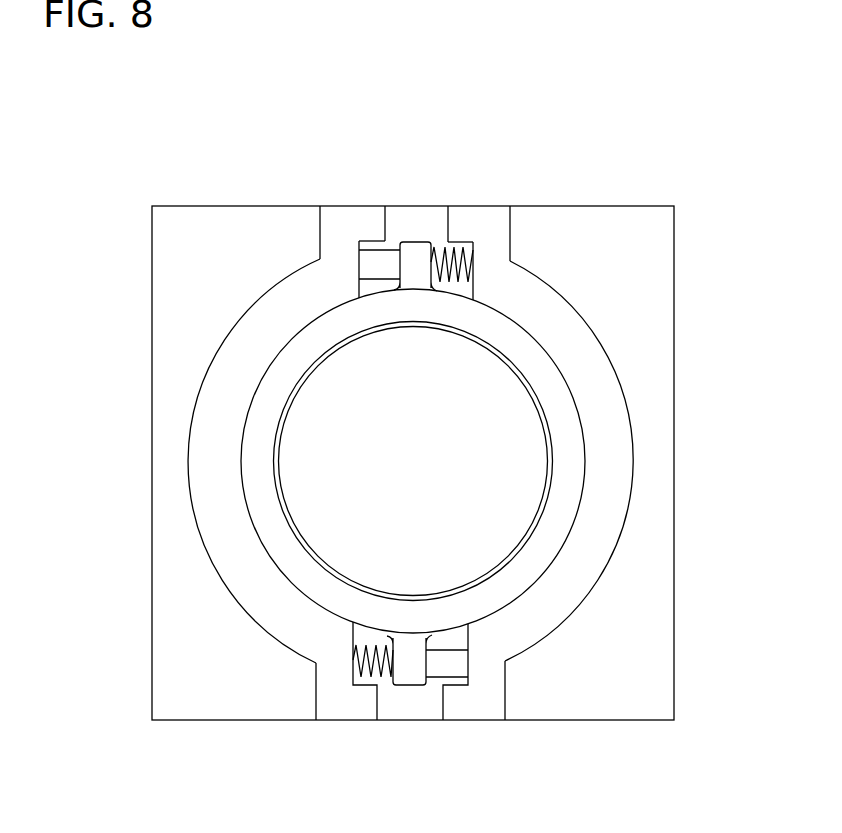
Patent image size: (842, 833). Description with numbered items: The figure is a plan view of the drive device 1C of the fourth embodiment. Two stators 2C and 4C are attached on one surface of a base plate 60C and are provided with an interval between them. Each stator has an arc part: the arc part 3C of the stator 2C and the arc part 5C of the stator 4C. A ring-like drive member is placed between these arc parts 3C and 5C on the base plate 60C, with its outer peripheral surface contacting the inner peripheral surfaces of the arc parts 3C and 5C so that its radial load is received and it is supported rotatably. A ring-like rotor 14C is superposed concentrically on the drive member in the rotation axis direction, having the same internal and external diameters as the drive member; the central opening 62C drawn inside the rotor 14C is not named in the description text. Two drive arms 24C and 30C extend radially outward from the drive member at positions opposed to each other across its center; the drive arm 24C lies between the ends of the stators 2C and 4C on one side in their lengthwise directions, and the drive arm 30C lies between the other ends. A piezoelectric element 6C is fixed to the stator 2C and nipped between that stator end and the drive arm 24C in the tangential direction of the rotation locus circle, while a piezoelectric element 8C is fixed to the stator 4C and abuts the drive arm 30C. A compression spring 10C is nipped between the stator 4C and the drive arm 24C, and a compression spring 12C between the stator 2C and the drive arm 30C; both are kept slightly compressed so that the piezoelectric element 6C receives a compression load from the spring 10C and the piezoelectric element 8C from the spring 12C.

The drive device 1C is at (217, 184).
The stator 2C is at (343, 220).
The arc part 3C is at (212, 457).
The stator 4C is at (503, 230).
The arc part 5C is at (622, 478).
The piezoelectric element 6C is at (378, 262).
The piezoelectric element 8C is at (447, 665).
The compression spring 10C is at (457, 248).
The compression spring 12C is at (369, 672).
The rotor 14C is at (560, 422).
The drive arm 24C is at (417, 250).
The drive arm 30C is at (407, 678).
The base plate 60C is at (650, 276).
The shaft bore 62C is at (280, 440).